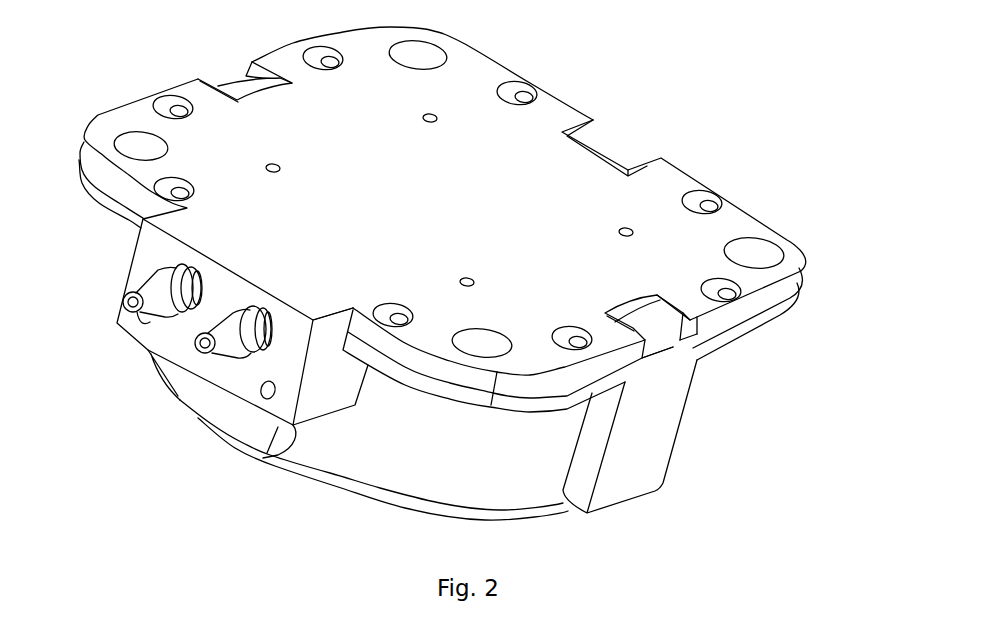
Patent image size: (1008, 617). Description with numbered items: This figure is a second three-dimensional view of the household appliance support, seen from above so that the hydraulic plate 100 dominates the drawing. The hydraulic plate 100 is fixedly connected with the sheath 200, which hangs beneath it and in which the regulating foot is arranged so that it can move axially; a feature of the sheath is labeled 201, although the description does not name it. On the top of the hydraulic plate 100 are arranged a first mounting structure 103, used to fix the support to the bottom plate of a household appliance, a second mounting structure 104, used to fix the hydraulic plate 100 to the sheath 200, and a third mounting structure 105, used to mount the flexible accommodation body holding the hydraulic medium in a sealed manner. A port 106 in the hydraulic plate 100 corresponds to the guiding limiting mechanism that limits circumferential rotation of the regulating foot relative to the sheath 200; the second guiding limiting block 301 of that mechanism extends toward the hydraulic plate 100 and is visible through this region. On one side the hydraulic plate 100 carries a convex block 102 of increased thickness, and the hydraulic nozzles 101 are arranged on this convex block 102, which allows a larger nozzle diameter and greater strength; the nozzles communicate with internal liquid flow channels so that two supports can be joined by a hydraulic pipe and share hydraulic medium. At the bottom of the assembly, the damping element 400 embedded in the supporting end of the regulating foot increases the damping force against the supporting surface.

The hydraulic plate 100 is at (527, 160).
The hydraulic nozzles 101 is at (218, 330).
The convex block 102 is at (306, 372).
The first mounting structure 103 is at (420, 58).
The second mounting structure 104 is at (520, 97).
The third mounting structure 105 is at (630, 232).
The port 106 is at (688, 330).
The sheath 200 is at (397, 443).
The lug 201 is at (638, 437).
The second guiding limiting block 301 is at (663, 315).
The damping element 400 is at (447, 507).